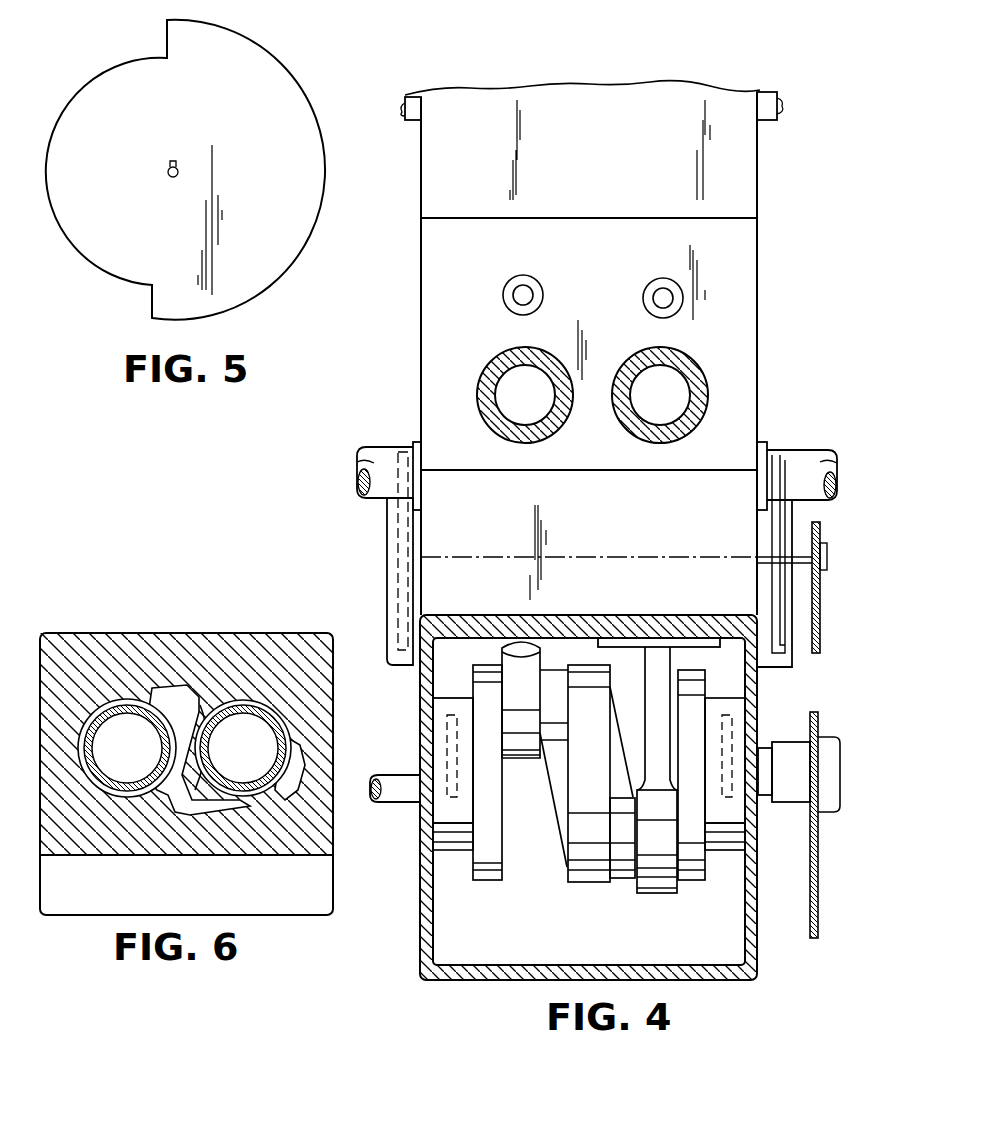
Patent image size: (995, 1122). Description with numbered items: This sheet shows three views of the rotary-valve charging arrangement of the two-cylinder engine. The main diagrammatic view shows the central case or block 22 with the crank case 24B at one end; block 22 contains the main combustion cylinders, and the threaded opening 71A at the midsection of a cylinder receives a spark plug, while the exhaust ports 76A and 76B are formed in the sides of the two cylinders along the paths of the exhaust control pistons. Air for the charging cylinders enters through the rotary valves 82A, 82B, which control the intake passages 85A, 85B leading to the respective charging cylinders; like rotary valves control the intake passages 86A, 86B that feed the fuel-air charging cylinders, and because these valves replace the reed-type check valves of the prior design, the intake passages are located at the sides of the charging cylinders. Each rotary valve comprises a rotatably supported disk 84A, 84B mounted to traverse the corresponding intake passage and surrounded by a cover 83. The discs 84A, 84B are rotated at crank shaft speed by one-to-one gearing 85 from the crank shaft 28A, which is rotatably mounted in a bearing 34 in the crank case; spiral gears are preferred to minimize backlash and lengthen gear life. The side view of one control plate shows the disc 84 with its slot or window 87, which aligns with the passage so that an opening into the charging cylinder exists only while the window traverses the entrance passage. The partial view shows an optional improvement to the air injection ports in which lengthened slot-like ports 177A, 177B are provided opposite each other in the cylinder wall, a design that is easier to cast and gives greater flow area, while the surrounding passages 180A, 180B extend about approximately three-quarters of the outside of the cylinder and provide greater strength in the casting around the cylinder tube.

In FIG. 5, the rotatably supported disk 84 is at (137, 108).
In FIG. 5, the slot or window 87 is at (140, 303).
In FIG. 4, the intake passage 86B is at (398, 106).
In FIG. 4, the intake passage 86A is at (785, 104).
In FIG. 4, the crank case 24B is at (448, 172).
In FIG. 4, the central case or block 22 is at (437, 405).
In FIG. 4, the threaded opening 71A is at (515, 292).
In FIG. 4, the exhaust port 76A is at (494, 352).
In FIG. 4, the exhaust port 76B is at (644, 348).
In FIG. 4, the rotary valve 82B is at (428, 507).
In FIG. 4, the rotary valve 82A is at (748, 520).
In FIG. 4, the intake passage 85B is at (374, 463).
In FIG. 4, the intake passage 85A is at (814, 458).
In FIG. 4, the cover 83 is at (387, 602).
In FIG. 4, the rotatably supported disk 84B is at (404, 547).
In FIG. 4, the rotatably supported disk 84A is at (772, 580).
In FIG. 4, the 1:1 gearing 85 is at (822, 710).
In FIG. 4, the bearing 34 is at (437, 806).
In FIG. 4, the crank shaft 28A is at (773, 795).
In FIG. 6, the surrounding passage 180B is at (157, 688).
In FIG. 6, the surrounding passage 180A is at (192, 805).
In FIG. 6, the slot-like port 177B is at (145, 787).
In FIG. 6, the slot-like port 177A is at (275, 778).